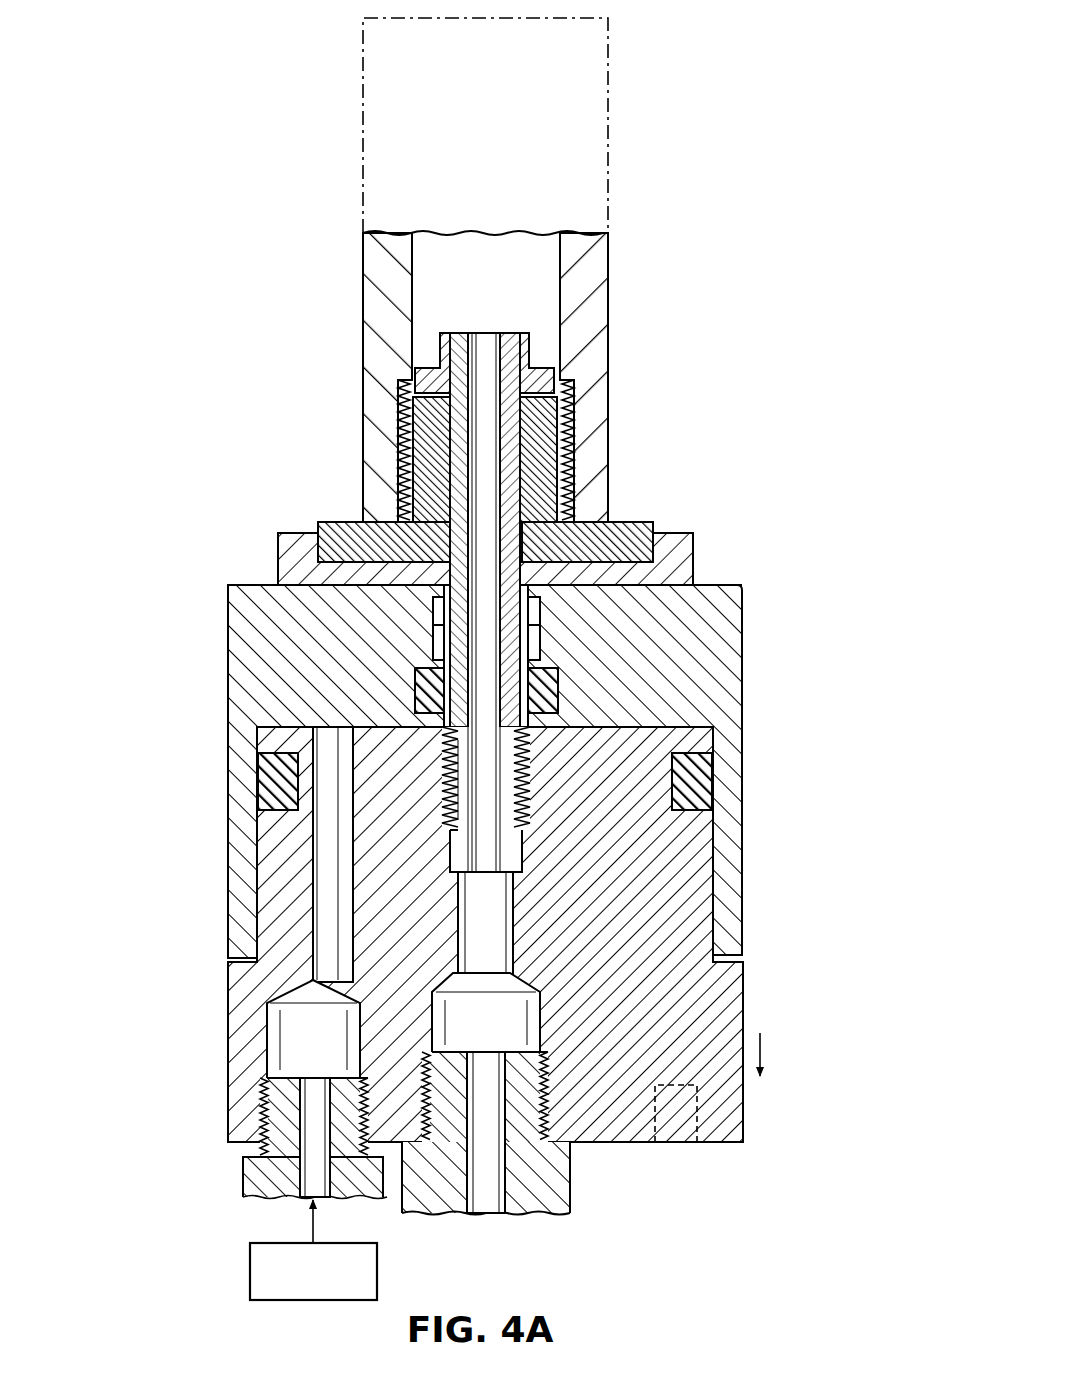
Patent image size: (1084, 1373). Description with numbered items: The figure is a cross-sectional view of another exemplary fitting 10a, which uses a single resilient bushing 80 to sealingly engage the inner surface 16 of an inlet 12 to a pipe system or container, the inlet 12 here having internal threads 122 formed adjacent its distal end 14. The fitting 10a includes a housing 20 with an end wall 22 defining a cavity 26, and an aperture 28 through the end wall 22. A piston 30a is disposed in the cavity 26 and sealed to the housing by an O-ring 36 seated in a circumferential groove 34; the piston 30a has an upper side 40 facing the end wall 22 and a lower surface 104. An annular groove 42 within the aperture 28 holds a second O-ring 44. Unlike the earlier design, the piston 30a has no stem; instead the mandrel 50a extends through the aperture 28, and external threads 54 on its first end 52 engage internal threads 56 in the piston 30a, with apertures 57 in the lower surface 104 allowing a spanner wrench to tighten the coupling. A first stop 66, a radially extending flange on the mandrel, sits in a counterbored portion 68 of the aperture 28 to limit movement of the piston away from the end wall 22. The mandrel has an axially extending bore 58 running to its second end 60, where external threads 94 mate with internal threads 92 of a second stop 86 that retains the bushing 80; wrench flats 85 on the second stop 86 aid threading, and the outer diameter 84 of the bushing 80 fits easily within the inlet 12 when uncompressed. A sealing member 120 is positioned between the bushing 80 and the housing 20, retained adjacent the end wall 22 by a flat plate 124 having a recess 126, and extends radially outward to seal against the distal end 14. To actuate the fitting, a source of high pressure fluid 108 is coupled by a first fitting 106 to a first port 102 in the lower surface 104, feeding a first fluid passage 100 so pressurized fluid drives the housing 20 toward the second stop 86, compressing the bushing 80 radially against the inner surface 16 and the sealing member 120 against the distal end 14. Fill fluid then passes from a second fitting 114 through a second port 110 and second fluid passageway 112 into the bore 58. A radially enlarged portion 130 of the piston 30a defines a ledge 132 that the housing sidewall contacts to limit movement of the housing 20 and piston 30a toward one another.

The fitting 10a is at (808, 340).
The inlet 12 is at (612, 274).
The distal end 14 is at (592, 520).
The inner surface 16 is at (412, 250).
The housing 20 is at (748, 648).
The end wall 22 is at (735, 583).
The cavity 26 is at (712, 866).
The aperture 28 is at (518, 735).
The piston 30a is at (749, 1146).
The circumferential groove 34 is at (262, 815).
The O-ring 36 is at (260, 790).
The upper side 40 is at (268, 727).
The annular groove 42 is at (535, 668).
The second O-ring 44 is at (556, 686).
The mandrel 50a is at (442, 767).
The first end 52 is at (520, 867).
The external threads 54 is at (450, 865).
The internal threads 56 is at (448, 822).
The apertures 57 is at (690, 1117).
The axially extending bore 58 is at (487, 438).
The second end 60 is at (456, 333).
The first stop 66 is at (433, 600).
The counterbored portion 68 is at (436, 636).
The resilient bushing 80 is at (412, 400).
The outer diameter 84 is at (410, 420).
The wrench flats 85 is at (413, 388).
The second stop 86 is at (600, 400).
The internal threads 92 is at (524, 345).
The external threads 94 is at (491, 333).
The first fluid passage 100 is at (308, 862).
The first port 102 is at (260, 1125).
The lower surface 104 is at (707, 1143).
The first fitting 106 is at (243, 1177).
The source of high pressure fluid 108 is at (250, 1272).
The second port 110 is at (573, 1142).
The second fluid passageway 112 is at (493, 928).
The second fitting 114 is at (567, 1207).
The sealing member 120 is at (337, 520).
The internal threads 122 is at (398, 455).
The flat plate 124 is at (695, 547).
The recess 126 is at (623, 520).
The radially enlarged portion 130 is at (745, 987).
The ledge 132 is at (733, 957).